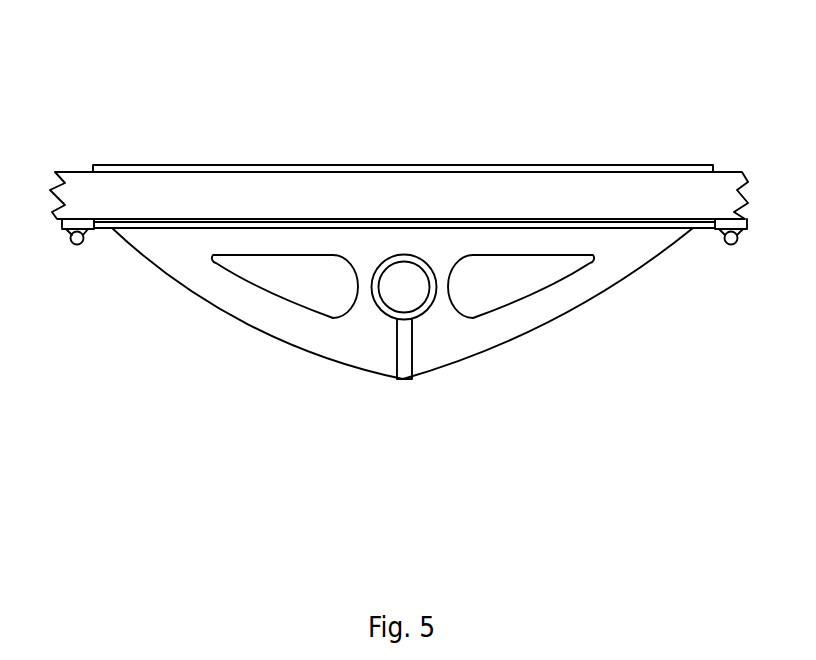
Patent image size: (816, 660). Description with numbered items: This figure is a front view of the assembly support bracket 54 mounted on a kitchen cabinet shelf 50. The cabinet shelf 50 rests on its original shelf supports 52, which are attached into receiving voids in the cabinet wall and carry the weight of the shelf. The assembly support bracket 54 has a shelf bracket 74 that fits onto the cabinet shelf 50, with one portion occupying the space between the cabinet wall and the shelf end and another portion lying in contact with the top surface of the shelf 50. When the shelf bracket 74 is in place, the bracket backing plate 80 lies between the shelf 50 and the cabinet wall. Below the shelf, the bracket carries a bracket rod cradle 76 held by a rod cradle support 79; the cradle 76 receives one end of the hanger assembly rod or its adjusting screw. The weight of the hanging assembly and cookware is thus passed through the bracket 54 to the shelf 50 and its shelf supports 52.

The cabinet shelf 50 is at (588, 198).
The shelf supports 52 is at (732, 244).
The assembly support bracket 54 is at (118, 269).
The shelf bracket 74 is at (400, 165).
The bracket rod cradle 76 is at (432, 288).
The rod cradle support 79 is at (403, 354).
The bracket backing plate 80 is at (313, 332).